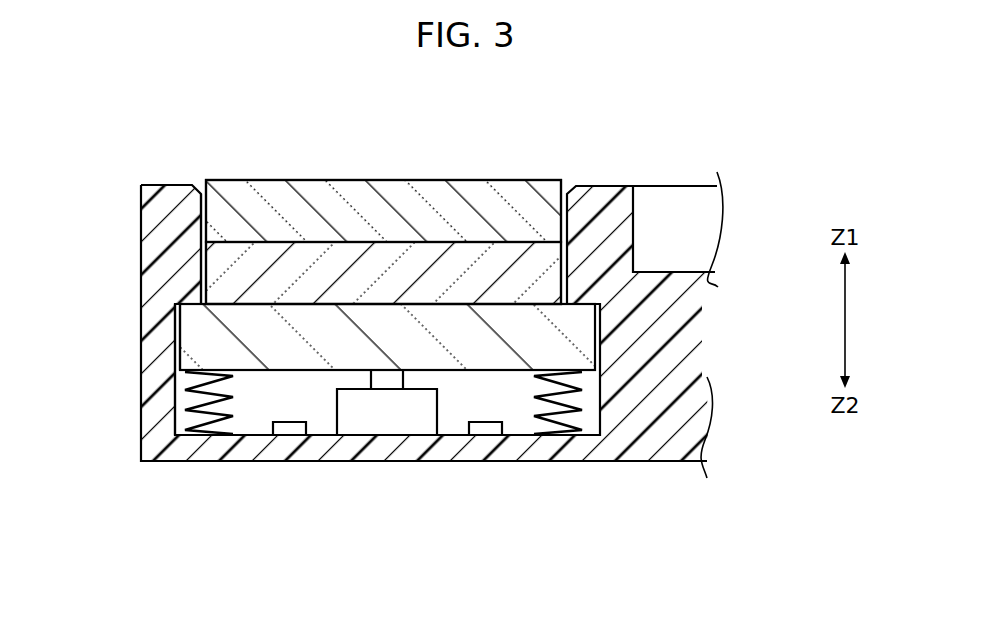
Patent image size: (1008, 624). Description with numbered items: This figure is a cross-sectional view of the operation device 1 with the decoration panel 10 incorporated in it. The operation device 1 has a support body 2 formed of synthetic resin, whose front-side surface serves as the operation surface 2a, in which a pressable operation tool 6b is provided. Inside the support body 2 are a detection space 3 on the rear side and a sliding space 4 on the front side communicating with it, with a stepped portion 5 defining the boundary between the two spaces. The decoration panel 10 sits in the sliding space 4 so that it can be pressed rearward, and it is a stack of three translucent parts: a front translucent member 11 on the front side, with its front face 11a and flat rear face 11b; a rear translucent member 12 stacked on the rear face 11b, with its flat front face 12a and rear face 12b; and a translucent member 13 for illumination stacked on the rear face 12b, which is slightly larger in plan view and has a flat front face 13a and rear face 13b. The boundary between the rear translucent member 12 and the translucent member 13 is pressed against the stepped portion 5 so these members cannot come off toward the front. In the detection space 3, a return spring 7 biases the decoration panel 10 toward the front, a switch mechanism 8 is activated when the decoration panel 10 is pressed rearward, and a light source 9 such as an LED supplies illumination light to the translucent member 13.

The operation device 1 is at (752, 135).
The support body 2 is at (657, 452).
The operation surface 2a is at (610, 187).
The detection space 3 is at (183, 398).
The sliding space 4 is at (203, 220).
The stepped portion 5 is at (187, 305).
The operation tool 6b is at (695, 225).
The return spring 7 is at (240, 423).
The switch mechanism 8 is at (385, 417).
The light source 9 is at (288, 430).
The decoration panel 10 is at (477, 174).
The front translucent member 11 is at (318, 195).
The front face 11a is at (357, 180).
The rear face 11b is at (247, 243).
The rear translucent member 12 is at (420, 267).
The front face 12a is at (525, 242).
The rear face 12b is at (240, 304).
The translucent member for illumination 13 is at (583, 343).
The front face 13a is at (527, 303).
The rear face 13b is at (310, 372).